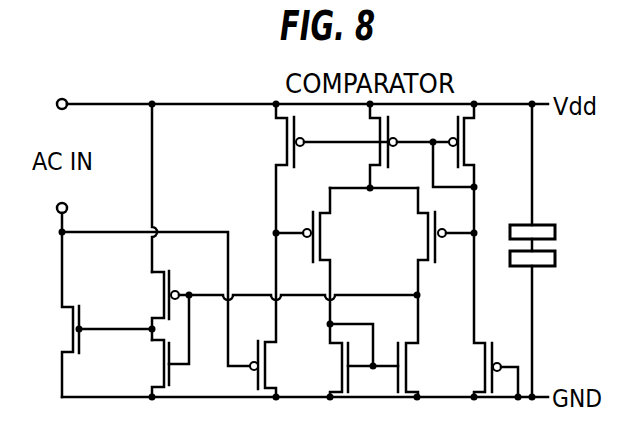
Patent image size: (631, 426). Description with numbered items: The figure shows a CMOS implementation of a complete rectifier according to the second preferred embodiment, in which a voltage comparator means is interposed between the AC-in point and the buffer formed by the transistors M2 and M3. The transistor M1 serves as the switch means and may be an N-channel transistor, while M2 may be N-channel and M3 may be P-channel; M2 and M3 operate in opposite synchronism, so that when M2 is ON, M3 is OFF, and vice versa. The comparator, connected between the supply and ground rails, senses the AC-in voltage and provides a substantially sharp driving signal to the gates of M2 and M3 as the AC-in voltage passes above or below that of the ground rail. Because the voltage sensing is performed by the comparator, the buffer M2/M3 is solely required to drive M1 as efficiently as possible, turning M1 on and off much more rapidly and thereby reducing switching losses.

The switch means transistor M1 is at (107, 314).
The N-channel buffer transistor M2 is at (153, 346).
The P-channel buffer transistor M3 is at (267, 305).